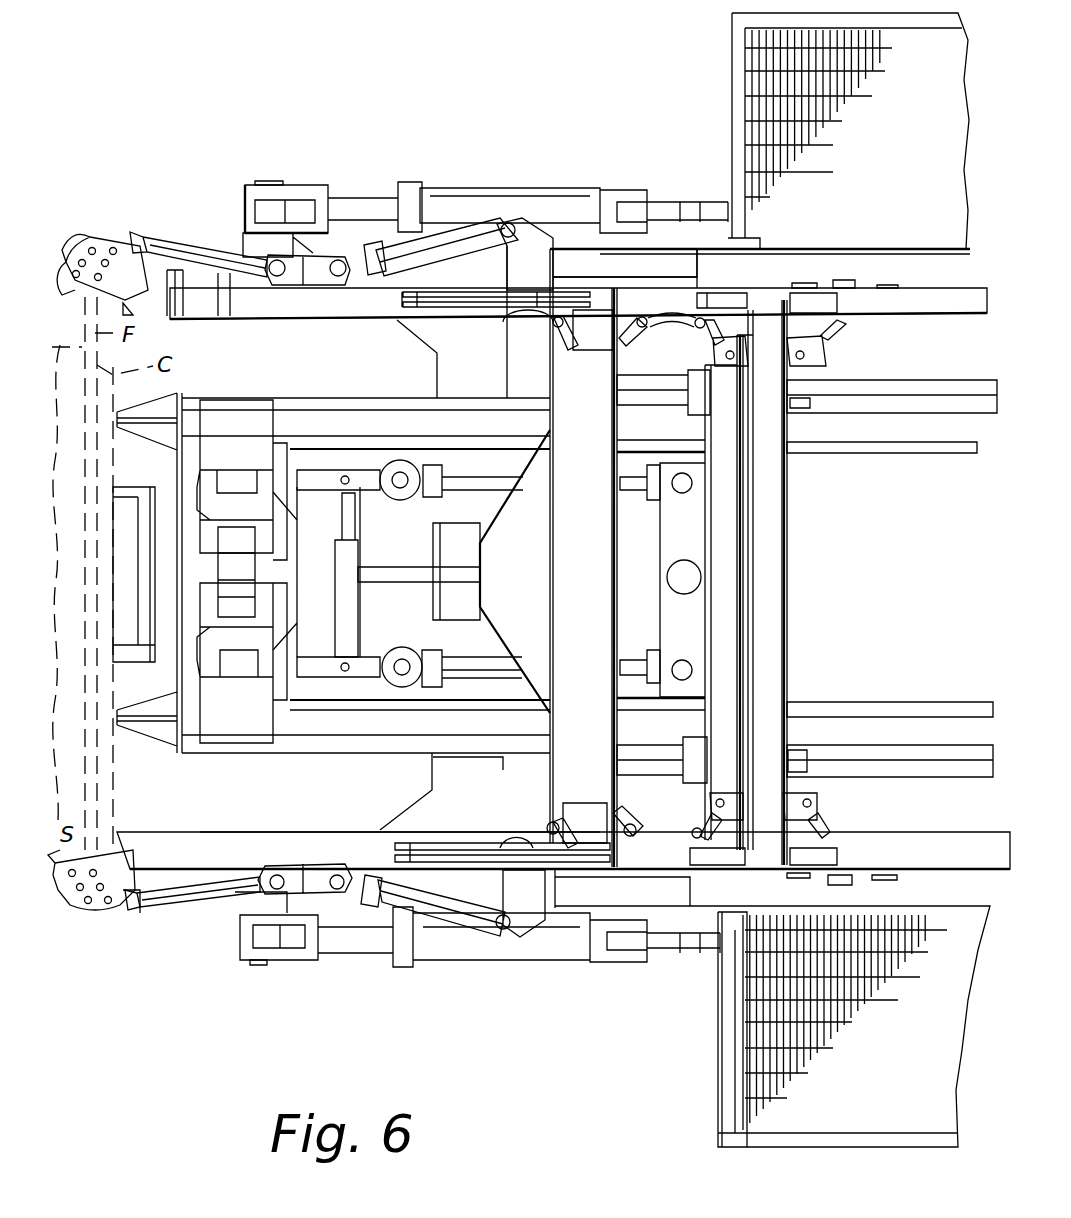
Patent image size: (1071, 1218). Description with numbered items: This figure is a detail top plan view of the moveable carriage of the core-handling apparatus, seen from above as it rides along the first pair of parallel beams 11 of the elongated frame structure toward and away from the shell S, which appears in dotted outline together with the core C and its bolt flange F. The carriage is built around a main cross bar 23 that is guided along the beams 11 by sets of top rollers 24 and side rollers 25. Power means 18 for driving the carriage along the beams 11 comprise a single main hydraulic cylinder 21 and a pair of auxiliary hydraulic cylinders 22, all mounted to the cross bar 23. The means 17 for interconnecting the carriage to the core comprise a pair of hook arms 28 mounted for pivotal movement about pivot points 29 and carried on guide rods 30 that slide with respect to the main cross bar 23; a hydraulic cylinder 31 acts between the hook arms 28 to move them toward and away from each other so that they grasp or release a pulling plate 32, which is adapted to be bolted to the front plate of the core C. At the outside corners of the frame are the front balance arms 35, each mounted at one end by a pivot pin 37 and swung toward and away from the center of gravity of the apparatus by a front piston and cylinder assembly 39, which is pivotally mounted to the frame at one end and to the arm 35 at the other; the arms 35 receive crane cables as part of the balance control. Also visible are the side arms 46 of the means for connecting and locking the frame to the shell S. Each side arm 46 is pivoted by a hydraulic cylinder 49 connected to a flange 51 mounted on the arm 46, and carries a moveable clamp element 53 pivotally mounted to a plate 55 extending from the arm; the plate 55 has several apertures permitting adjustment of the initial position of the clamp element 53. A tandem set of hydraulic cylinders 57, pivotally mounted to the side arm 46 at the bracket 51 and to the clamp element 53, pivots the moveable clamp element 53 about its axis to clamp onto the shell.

The first pair of parallel beams 11 is at (915, 297).
The core interconnection means 17 is at (185, 663).
The force exerting power means 18 is at (865, 432).
The main hydraulic cylinder 21 is at (450, 600).
The auxiliary hydraulic cylinders 22 is at (862, 392).
The main cross bar 23 is at (600, 367).
The top roller sets 24 is at (405, 299).
The side roller sets 25 is at (665, 311).
The hook arms 28 is at (245, 490).
The pivot points 29 is at (403, 452).
The guide rods 30 is at (428, 497).
The hook actuating hydraulic cylinder 31 is at (352, 552).
The pulling plate 32 is at (148, 477).
The front balance arms 35 is at (250, 207).
The pivot pins 37 is at (268, 181).
The front piston and cylinder assemblies 39 is at (462, 962).
The side arms 46 is at (340, 833).
The side arm hydraulic cylinder 49 is at (480, 908).
The flange 51 is at (300, 866).
The moveable clamp element 53 is at (92, 237).
The plate 55 is at (120, 915).
The tandem hydraulic cylinders 57 is at (185, 245).